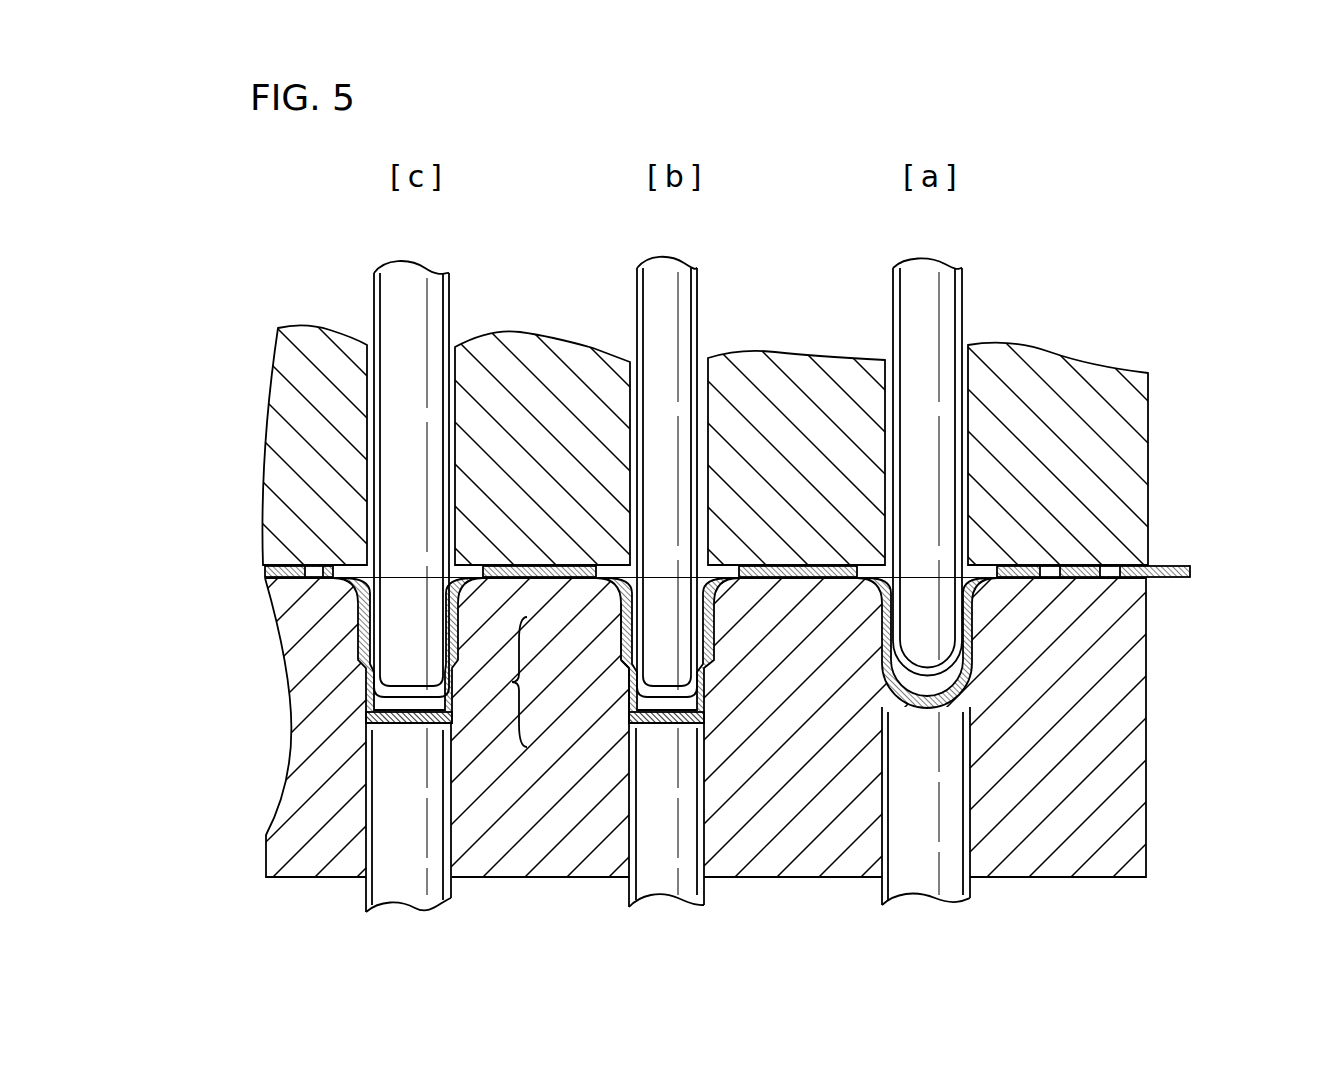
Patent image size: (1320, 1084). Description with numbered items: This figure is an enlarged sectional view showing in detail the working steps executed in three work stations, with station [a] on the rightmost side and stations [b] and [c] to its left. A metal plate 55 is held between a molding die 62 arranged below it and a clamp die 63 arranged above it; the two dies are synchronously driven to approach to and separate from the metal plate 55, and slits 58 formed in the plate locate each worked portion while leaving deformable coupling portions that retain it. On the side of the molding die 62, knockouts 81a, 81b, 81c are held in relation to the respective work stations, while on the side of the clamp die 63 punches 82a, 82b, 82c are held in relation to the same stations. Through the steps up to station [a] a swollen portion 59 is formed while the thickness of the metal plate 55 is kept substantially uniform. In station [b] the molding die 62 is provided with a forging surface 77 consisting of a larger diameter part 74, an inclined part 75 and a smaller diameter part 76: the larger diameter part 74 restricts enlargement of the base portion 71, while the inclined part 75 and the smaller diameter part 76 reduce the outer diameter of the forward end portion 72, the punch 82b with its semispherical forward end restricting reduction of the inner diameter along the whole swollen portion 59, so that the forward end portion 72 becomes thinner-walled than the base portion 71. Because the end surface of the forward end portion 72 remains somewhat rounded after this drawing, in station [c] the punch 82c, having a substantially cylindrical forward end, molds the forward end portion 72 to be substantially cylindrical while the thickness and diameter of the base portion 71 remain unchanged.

The metal plate 55 is at (1178, 565).
The slits 58 is at (1025, 578).
The swollen portion 59 is at (972, 673).
The molding die 62 is at (1133, 715).
The clamp die 63 is at (1132, 452).
The base portion 71 is at (358, 630).
The forward end portion 72 is at (366, 705).
The larger diameter part 74 is at (616, 633).
The inclined part 75 is at (618, 676).
The smaller diameter part 76 is at (618, 705).
The forging surface 77 is at (502, 682).
The knockout 81a is at (968, 893).
The knockout 81b is at (703, 900).
The knockout 81c is at (443, 898).
The punch 82a is at (952, 297).
The punch 82b is at (692, 293).
The punch 82c is at (440, 288).